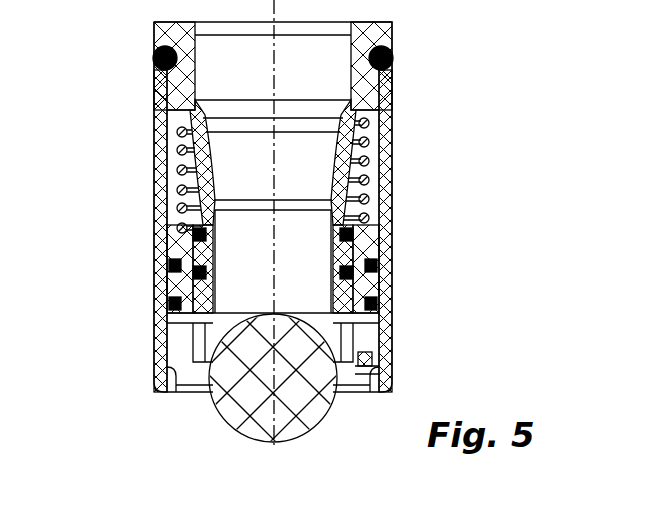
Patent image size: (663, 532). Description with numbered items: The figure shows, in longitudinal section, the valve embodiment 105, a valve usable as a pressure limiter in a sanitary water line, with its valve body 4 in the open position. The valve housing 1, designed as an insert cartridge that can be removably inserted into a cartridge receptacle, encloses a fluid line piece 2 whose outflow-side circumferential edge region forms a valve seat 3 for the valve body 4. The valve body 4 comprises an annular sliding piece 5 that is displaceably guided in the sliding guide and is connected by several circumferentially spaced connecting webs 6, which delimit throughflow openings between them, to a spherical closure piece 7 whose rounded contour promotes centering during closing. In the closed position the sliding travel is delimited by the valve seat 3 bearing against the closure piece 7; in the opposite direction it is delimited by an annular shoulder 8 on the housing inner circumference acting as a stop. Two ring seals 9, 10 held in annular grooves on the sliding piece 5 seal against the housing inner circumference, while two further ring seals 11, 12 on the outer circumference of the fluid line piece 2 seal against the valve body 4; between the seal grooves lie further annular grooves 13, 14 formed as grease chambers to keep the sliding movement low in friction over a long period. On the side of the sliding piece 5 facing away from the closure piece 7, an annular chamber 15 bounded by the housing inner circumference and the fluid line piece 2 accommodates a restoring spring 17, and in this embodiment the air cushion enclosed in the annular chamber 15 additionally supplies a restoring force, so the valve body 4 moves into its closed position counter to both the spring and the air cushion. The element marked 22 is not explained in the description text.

The valve housing 1 is at (390, 335).
The fluid line piece 2 is at (334, 178).
The valve seat 3 is at (220, 326).
The valve body 4 is at (231, 446).
The sliding piece 5 is at (190, 318).
The connecting webs 6 is at (200, 394).
The closure piece 7 is at (314, 408).
The annular shoulder 8 is at (368, 352).
The ring seal 9 is at (160, 268).
The ring seal 10 is at (158, 302).
The ring seal 11 is at (210, 236).
The ring seal 12 is at (210, 275).
The annular groove 13 is at (212, 255).
The annular groove 14 is at (155, 285).
The annular chamber 15 is at (396, 143).
The restoring spring 17 is at (397, 172).
The O-ring 22 is at (400, 56).
The valve embodiment 105 is at (465, 178).